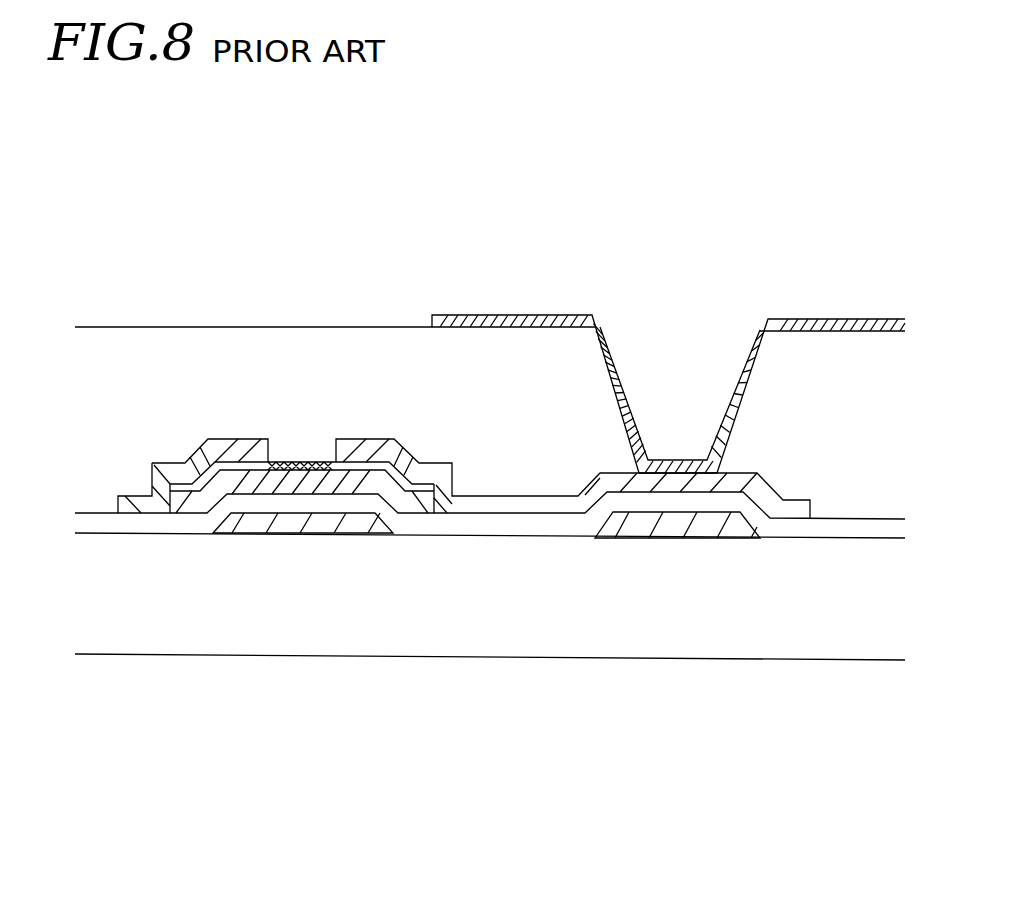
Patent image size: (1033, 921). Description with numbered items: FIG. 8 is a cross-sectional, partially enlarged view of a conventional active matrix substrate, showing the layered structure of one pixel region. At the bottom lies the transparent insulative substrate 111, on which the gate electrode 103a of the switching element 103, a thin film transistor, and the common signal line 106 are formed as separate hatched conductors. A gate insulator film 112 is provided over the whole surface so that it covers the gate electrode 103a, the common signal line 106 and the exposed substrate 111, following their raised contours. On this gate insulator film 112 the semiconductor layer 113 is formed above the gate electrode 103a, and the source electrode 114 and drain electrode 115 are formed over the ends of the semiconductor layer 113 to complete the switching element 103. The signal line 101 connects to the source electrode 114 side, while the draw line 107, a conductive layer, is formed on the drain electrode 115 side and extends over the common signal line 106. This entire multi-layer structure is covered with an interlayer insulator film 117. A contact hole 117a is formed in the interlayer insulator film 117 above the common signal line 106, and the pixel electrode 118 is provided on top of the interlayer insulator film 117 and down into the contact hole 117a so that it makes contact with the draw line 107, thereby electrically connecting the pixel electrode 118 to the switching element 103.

The signal line 101 is at (132, 495).
The switching element 103 is at (200, 568).
The gate electrode 103a is at (270, 520).
The common signal line 106 is at (705, 525).
The draw line 107 is at (405, 455).
The transparent insulative substrate 111 is at (557, 630).
The gate insulator film 112 is at (495, 522).
The semiconductor layer 113 is at (342, 495).
The source electrode 114 is at (225, 437).
The drain electrode 115 is at (350, 465).
The interlayer insulator film 117 is at (135, 352).
The contact hole 117a is at (708, 310).
The pixel electrode 118 is at (577, 316).